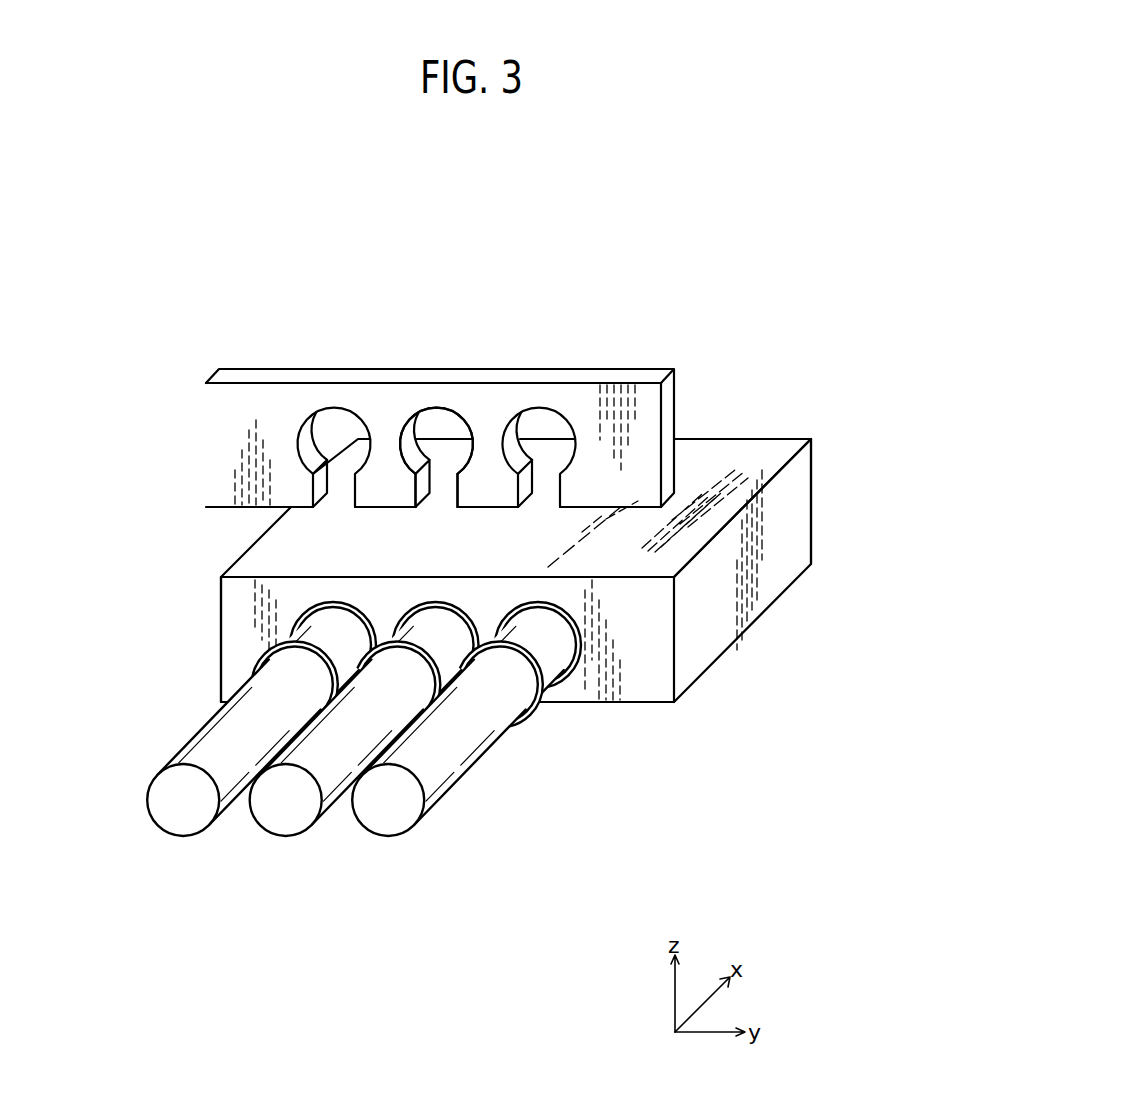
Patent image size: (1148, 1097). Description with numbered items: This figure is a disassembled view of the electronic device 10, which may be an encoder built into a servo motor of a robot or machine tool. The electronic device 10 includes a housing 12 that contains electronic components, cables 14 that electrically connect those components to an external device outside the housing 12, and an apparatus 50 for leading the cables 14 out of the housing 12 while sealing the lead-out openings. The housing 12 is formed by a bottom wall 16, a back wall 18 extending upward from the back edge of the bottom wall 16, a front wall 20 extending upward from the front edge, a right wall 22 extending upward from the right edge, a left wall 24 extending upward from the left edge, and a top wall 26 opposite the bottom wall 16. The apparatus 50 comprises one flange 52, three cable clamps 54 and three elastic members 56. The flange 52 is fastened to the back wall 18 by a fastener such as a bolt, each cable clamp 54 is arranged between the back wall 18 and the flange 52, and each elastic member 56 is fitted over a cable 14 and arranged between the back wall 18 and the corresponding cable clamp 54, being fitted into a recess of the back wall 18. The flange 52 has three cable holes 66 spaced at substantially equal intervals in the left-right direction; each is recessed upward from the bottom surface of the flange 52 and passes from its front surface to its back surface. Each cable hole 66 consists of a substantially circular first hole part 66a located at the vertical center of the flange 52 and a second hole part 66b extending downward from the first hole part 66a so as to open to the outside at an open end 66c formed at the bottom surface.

The electronic device 10 is at (813, 208).
The housing 12 is at (494, 549).
The cables 14 is at (377, 827).
The bottom wall 16 is at (632, 704).
The back wall 18 is at (643, 630).
The front wall 20 is at (811, 508).
The right wall 22 is at (767, 567).
The left wall 24 is at (220, 650).
The top wall 26 is at (748, 457).
The apparatus 50 is at (122, 460).
The flange 52 is at (217, 472).
The cable clamps 54 is at (287, 641).
The elastic members 56 is at (327, 597).
The cable holes 66 is at (313, 442).
The first hole part 66a is at (450, 410).
The second hole part 66b is at (455, 476).
The open end 66c is at (440, 500).